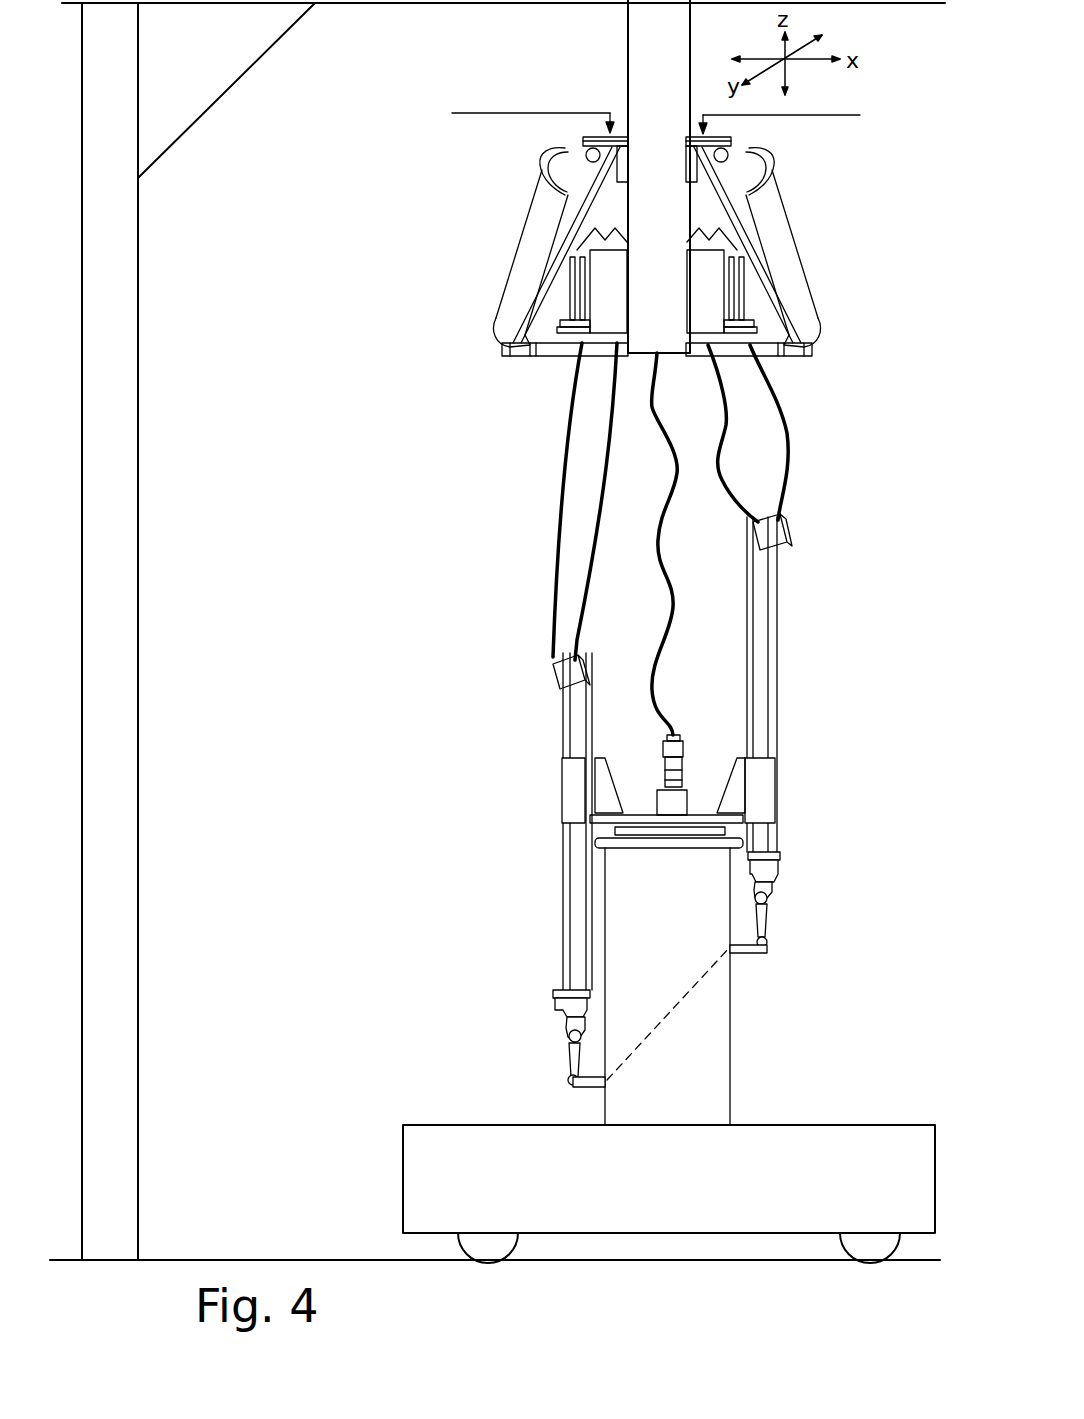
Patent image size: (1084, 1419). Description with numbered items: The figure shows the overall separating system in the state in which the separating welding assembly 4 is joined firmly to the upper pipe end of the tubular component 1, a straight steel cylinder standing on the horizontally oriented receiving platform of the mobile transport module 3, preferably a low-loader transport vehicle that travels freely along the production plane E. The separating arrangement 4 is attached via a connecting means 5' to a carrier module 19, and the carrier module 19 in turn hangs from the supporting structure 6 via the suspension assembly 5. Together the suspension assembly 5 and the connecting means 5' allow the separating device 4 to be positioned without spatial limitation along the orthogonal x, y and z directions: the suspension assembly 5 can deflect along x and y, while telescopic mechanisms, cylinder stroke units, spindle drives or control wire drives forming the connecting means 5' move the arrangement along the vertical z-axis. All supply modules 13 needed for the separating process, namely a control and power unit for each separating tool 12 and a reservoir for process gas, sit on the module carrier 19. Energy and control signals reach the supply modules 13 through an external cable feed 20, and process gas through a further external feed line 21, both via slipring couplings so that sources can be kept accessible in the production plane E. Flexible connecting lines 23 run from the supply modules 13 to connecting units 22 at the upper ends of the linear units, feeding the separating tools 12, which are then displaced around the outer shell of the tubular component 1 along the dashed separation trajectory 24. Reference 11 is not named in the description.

The tubular component 1 is at (705, 1083).
The mobile transport module 3 is at (458, 1135).
The separating welding assembly 4 is at (512, 797).
The suspension assembly 5 is at (611, 176).
The connecting means 5' is at (590, 544).
The supporting structure 6 is at (138, 487).
The actuator 11 is at (770, 905).
The separating tool 12 is at (573, 1082).
The supply modules 13 is at (570, 277).
The carrier module 19 is at (805, 352).
The external cable feed 20 is at (477, 113).
The external feed line 21 is at (833, 115).
The connecting units 22 is at (782, 538).
The flexible connecting lines 23 is at (783, 407).
The separation trajectory 24 is at (683, 998).
The production plane E is at (232, 1260).